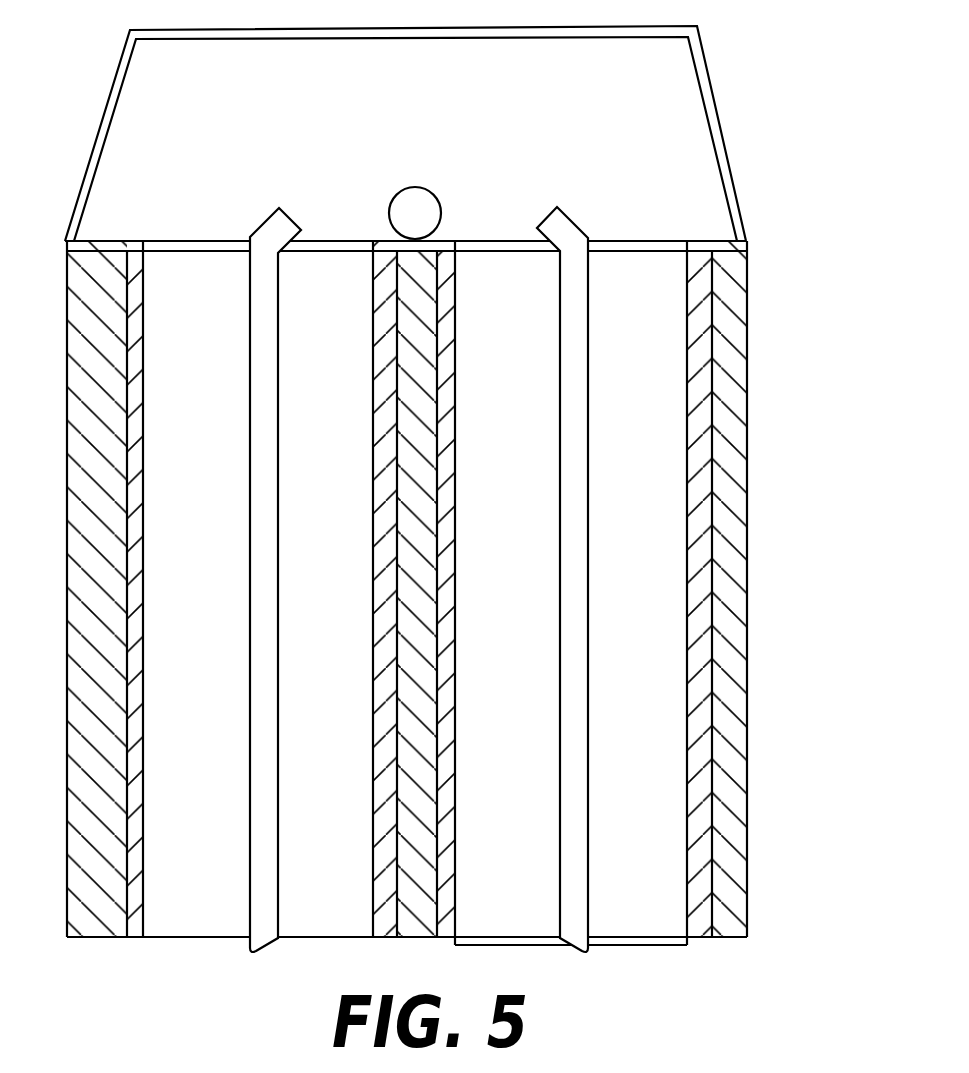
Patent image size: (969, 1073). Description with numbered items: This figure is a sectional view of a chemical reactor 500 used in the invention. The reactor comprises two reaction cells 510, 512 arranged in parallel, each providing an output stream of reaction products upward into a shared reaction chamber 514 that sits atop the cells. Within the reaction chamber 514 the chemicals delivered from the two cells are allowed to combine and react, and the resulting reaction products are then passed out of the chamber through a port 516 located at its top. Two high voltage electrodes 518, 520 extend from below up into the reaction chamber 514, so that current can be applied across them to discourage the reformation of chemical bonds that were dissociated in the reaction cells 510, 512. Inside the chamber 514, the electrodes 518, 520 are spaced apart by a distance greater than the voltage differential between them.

The chemical reactor 500 is at (902, 97).
The reaction cell 510 is at (669, 612).
The reaction cell 512 is at (225, 642).
The reaction chamber 514 is at (672, 110).
The port 516 is at (417, 187).
The high voltage electrode 518 is at (573, 522).
The high voltage electrode 520 is at (266, 547).